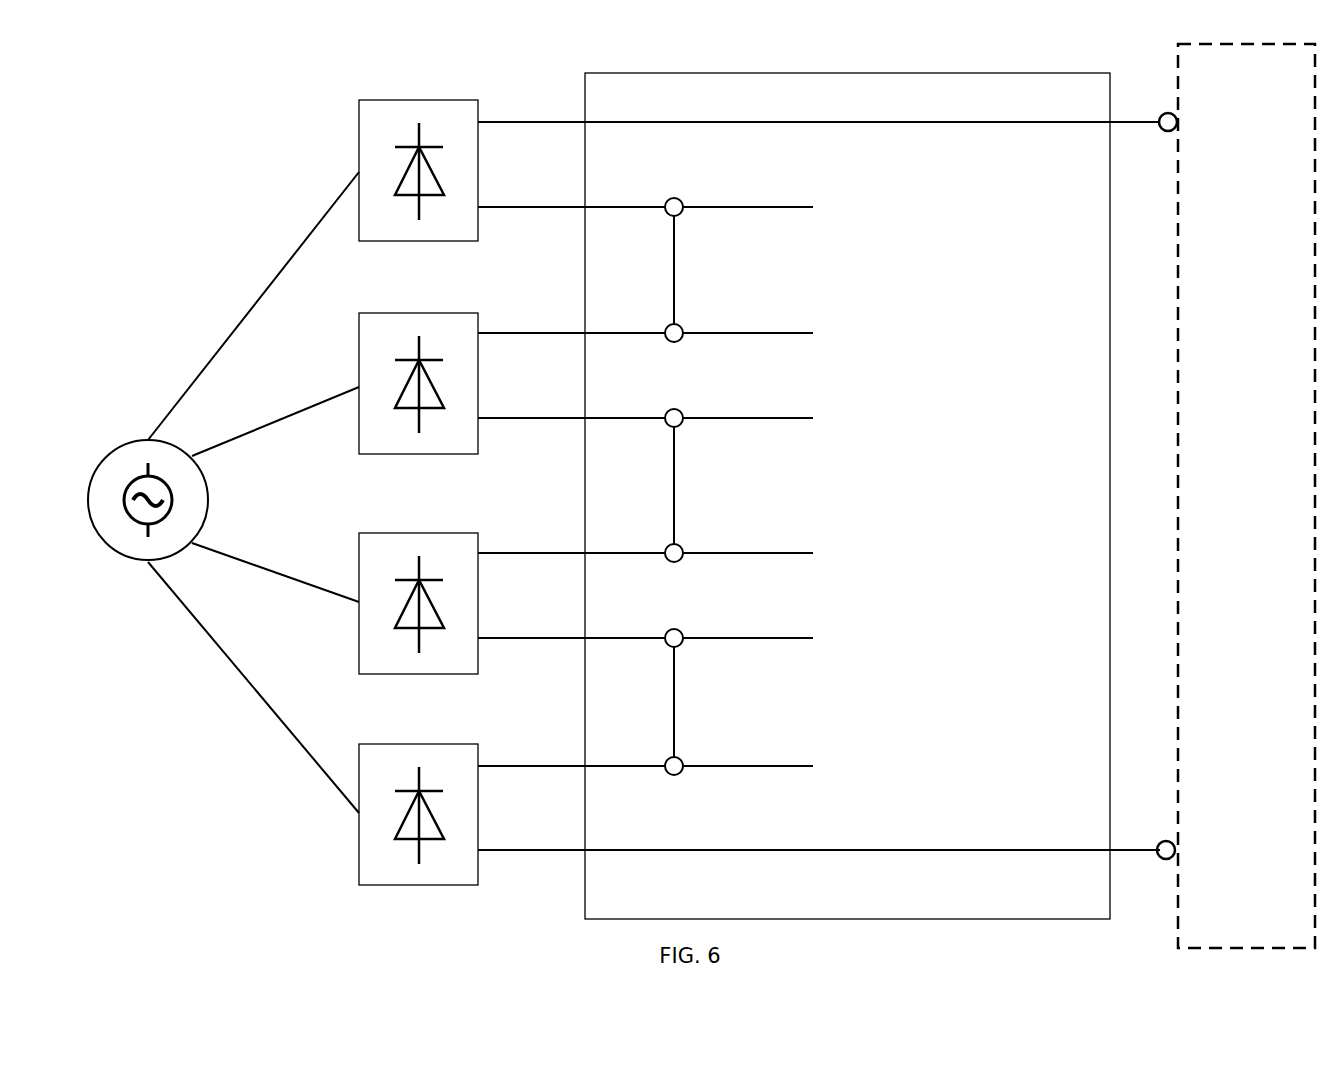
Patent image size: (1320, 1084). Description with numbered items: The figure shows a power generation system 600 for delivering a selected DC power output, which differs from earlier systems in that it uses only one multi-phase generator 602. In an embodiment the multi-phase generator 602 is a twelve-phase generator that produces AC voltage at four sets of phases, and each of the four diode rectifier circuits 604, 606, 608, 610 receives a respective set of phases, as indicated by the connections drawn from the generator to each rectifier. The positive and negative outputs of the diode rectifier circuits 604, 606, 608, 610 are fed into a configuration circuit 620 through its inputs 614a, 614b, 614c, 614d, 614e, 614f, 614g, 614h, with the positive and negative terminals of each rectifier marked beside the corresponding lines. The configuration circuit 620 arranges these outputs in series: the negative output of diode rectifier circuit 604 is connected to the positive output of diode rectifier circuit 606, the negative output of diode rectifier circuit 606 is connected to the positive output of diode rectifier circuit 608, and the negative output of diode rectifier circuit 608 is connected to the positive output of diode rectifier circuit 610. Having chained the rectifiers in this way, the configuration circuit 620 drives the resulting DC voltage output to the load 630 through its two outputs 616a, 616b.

The power generation system 600 is at (193, 172).
The multi-phase generator 602 is at (207, 500).
The diode rectifier circuit 604 is at (443, 242).
The diode rectifier circuit 606 is at (443, 454).
The diode rectifier circuit 608 is at (443, 674).
The diode rectifier circuit 610 is at (443, 885).
The input 614a is at (585, 122).
The input 614b is at (585, 207).
The input 614c is at (585, 333).
The input 614d is at (585, 418).
The input 614e is at (585, 553).
The input 614f is at (585, 638).
The input 614g is at (585, 766).
The input 614h is at (585, 850).
The output 616a is at (1113, 123).
The output 616b is at (1115, 851).
The configuration circuit 620 is at (847, 496).
The load 630 is at (1246, 496).